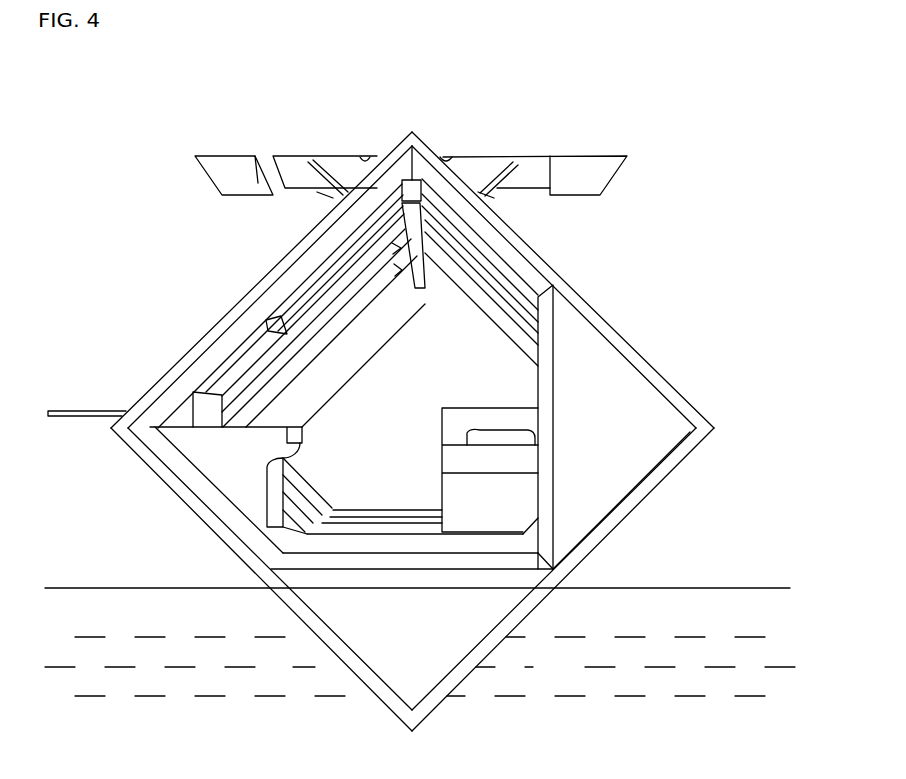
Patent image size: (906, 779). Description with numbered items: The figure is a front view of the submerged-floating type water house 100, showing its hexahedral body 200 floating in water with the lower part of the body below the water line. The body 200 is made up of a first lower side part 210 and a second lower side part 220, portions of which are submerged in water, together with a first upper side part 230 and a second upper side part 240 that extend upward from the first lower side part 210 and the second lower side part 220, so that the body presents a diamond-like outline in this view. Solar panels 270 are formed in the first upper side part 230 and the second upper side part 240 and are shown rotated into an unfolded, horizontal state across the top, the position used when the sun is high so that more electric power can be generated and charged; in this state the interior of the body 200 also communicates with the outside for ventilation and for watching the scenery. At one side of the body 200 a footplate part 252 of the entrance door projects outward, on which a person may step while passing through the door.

The submerged-floating type water house 100 is at (723, 203).
The body 200 is at (687, 387).
The first lower side part 210 is at (312, 620).
The second lower side part 220 is at (513, 620).
The first upper side part 230 is at (277, 270).
The second upper side part 240 is at (602, 317).
The footplate part 252 is at (76, 410).
The solar panels 270 is at (318, 152).